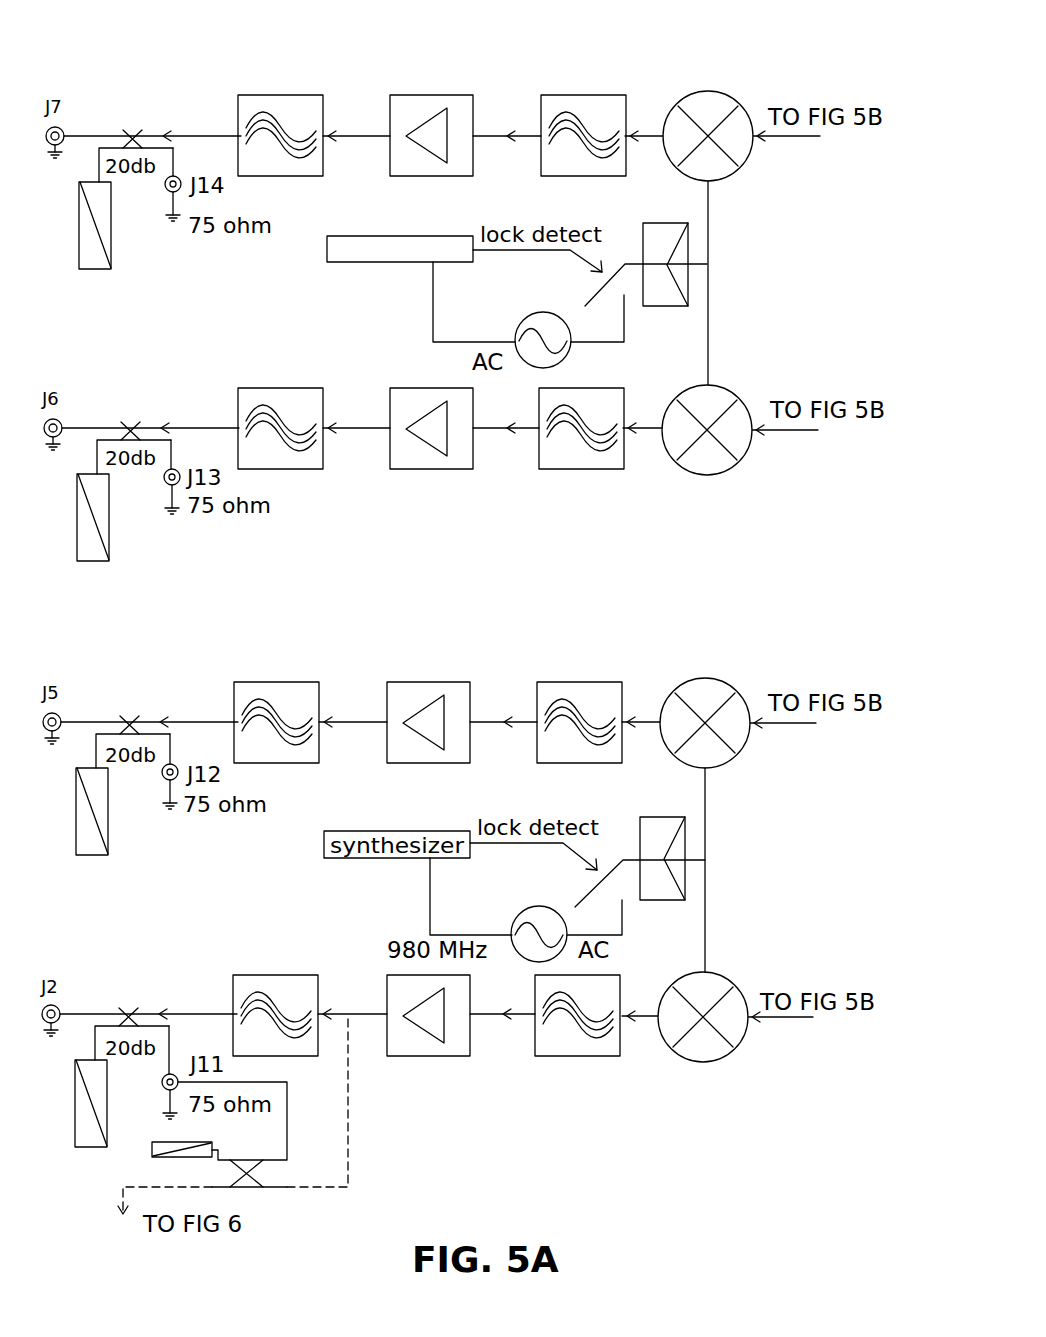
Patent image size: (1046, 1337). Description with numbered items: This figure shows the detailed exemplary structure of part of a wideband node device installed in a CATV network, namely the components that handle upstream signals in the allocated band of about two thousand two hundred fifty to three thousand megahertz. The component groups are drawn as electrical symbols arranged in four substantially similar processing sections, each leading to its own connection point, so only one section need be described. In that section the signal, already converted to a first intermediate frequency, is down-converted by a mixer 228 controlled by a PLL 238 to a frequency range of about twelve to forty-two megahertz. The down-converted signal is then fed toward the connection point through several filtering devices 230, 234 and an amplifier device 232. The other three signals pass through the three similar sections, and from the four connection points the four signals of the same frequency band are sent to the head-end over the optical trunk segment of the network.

The mixer 228 is at (707, 92).
The filtering device 230 is at (583, 95).
The amplifier device 232 is at (433, 95).
The filtering device 234 is at (278, 95).
The PLL 238 is at (433, 297).